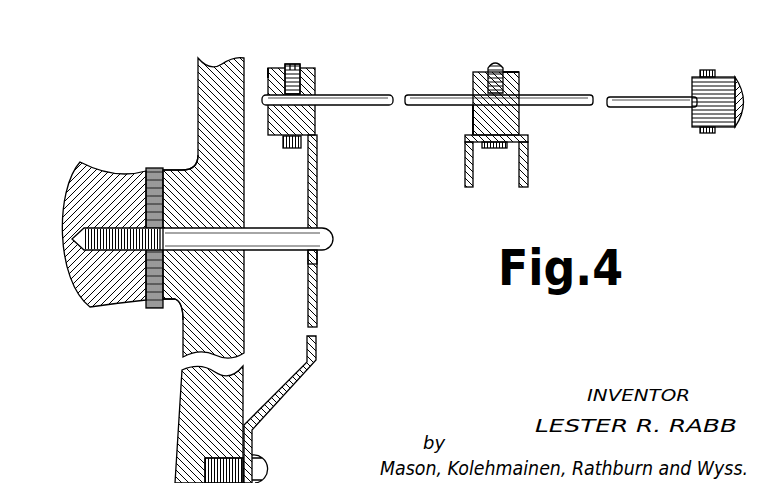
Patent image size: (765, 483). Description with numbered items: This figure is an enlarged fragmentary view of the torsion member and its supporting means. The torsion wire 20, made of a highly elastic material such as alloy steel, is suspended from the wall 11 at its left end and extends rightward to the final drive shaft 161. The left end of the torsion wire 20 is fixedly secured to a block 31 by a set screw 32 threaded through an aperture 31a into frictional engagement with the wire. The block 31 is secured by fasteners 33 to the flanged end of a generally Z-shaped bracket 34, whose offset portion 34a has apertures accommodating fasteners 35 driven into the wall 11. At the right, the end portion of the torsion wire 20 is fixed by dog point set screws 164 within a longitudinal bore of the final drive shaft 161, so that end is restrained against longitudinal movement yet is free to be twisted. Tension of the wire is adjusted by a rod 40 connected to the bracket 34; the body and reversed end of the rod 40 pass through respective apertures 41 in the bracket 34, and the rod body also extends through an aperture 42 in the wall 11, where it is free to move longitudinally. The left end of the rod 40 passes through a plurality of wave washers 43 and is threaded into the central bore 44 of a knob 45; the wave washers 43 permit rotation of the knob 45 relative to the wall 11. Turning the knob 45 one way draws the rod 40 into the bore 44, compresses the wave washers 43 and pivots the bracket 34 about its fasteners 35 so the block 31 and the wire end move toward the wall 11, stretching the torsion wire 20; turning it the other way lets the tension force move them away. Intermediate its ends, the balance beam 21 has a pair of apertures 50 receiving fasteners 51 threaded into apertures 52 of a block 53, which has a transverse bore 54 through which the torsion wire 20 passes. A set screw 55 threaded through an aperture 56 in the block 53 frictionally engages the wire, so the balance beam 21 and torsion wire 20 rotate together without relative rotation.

The wall 11 is at (186, 438).
The torsion wire 20 is at (383, 94).
The balance beam 21 is at (529, 165).
The block 31 is at (316, 82).
The aperture 31a is at (276, 72).
The set screw 32 is at (300, 66).
The fasteners 33 is at (294, 149).
The bracket 34 is at (318, 190).
The offset portion 34a is at (256, 436).
The fasteners 35 is at (266, 467).
The rod 40 is at (202, 262).
The apertures 41 is at (318, 268).
The aperture 42 is at (214, 227).
The wave washers 43 is at (160, 170).
The bore 44 is at (118, 250).
The knob 45 is at (72, 194).
The apertures 50 is at (505, 110).
The fasteners 51 is at (489, 149).
The apertures 52 is at (522, 129).
The block 53 is at (528, 123).
The transverse bore 54 is at (478, 108).
The set screw 55 is at (500, 70).
The aperture 56 is at (517, 80).
The final drive shaft 161 is at (712, 92).
The dog point set screws 164 is at (700, 141).